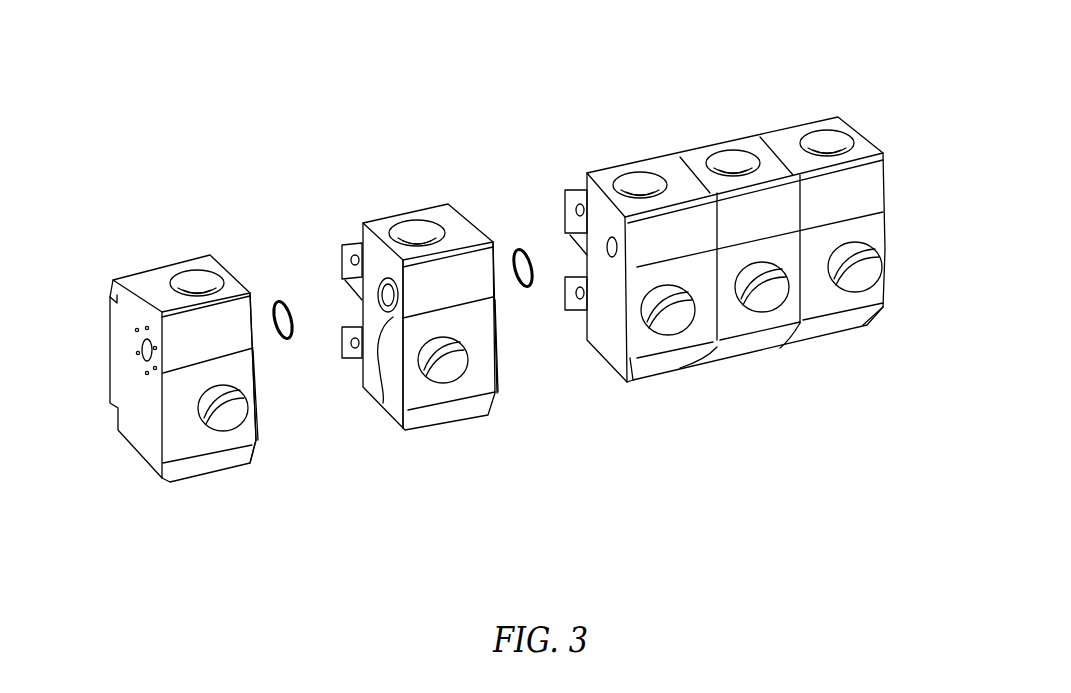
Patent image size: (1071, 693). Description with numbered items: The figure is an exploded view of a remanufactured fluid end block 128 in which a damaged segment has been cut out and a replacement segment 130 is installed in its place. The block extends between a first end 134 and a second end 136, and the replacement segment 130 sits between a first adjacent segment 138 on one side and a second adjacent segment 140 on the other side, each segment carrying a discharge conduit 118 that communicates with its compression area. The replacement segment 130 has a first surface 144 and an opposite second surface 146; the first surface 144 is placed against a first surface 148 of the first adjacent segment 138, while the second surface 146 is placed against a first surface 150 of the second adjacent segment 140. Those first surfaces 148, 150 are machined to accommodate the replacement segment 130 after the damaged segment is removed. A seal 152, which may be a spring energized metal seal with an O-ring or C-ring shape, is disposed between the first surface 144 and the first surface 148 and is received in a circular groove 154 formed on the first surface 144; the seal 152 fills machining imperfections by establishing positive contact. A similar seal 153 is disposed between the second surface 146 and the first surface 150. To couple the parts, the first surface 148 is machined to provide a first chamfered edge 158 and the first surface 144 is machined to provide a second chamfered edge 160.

The remanufactured fluid end block 128 is at (795, 64).
The replacement segment 130 is at (390, 218).
The first end 134 is at (103, 383).
The second end 136 is at (892, 202).
The first adjacent segment 138 is at (148, 277).
The second adjacent segment 140 is at (612, 172).
The discharge conduit 118 is at (141, 347).
The first surface 144 is at (392, 408).
The second surface 146 is at (498, 340).
The first surface 148 is at (262, 394).
The first surface 150 is at (612, 340).
The seal 152 is at (282, 300).
The seal 153 is at (520, 248).
The circular groove 154 is at (382, 393).
The first chamfered edge 158 is at (262, 428).
The second chamfered edge 160 is at (410, 387).